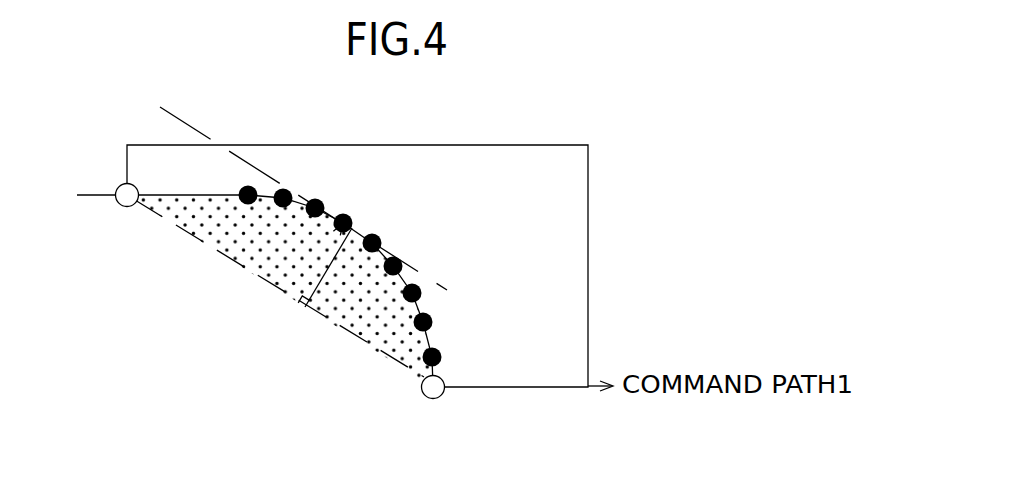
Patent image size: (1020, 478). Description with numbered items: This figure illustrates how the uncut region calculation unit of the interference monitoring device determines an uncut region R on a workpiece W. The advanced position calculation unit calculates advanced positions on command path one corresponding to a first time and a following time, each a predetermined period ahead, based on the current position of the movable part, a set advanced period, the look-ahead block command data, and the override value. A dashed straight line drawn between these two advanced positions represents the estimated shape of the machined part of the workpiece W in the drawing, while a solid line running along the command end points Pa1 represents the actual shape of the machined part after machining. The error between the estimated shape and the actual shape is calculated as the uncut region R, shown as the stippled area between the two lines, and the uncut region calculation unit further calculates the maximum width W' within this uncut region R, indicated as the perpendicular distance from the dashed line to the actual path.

The command end points Pa1 is at (313, 200).
The uncut region R is at (245, 255).
The workpiece W is at (357, 237).
The maximum width W' is at (319, 312).